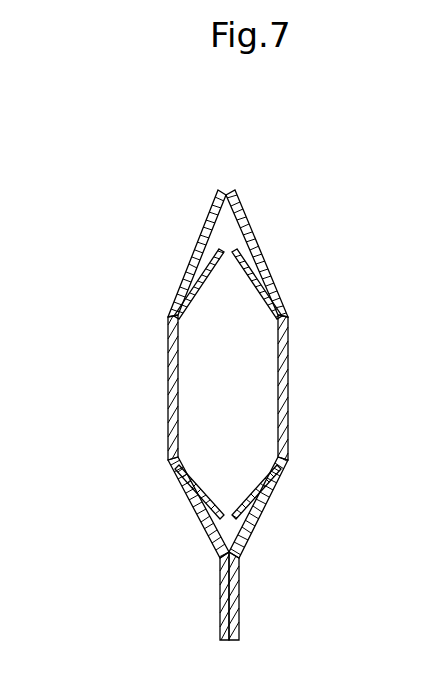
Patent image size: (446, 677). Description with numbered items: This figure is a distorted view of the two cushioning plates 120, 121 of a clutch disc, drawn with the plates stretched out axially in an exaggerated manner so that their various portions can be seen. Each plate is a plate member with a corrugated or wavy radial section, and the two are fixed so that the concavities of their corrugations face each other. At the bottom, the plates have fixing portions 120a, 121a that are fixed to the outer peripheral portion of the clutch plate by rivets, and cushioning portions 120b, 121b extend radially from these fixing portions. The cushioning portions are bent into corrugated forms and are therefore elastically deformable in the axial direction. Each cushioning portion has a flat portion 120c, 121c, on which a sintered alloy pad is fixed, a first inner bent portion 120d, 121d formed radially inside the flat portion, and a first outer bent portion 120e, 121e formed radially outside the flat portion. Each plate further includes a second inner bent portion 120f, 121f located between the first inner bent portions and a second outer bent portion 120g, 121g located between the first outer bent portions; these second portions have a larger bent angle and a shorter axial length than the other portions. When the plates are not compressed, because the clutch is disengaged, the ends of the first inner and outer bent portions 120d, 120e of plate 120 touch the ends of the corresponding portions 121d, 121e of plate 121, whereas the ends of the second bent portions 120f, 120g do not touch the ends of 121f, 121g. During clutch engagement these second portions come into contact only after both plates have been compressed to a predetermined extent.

The cushioning plate 120 is at (157, 297).
The cushioning plate 121 is at (303, 306).
The fixing portion 120a is at (218, 607).
The fixing portion 121a is at (240, 612).
The cushioning portion 120b is at (159, 378).
The cushioning portion 121b is at (300, 376).
The flat portion 120c is at (170, 430).
The flat portion 121c is at (284, 420).
The first inner bent portion 120d is at (203, 530).
The first inner bent portion 121d is at (255, 525).
The first outer bent portion 120e is at (212, 210).
The first outer bent portion 121e is at (285, 188).
The second inner bent portion 120f is at (190, 497).
The second inner bent portion 121f is at (270, 485).
The second outer bent portion 120g is at (200, 272).
The second outer bent portion 121g is at (254, 258).